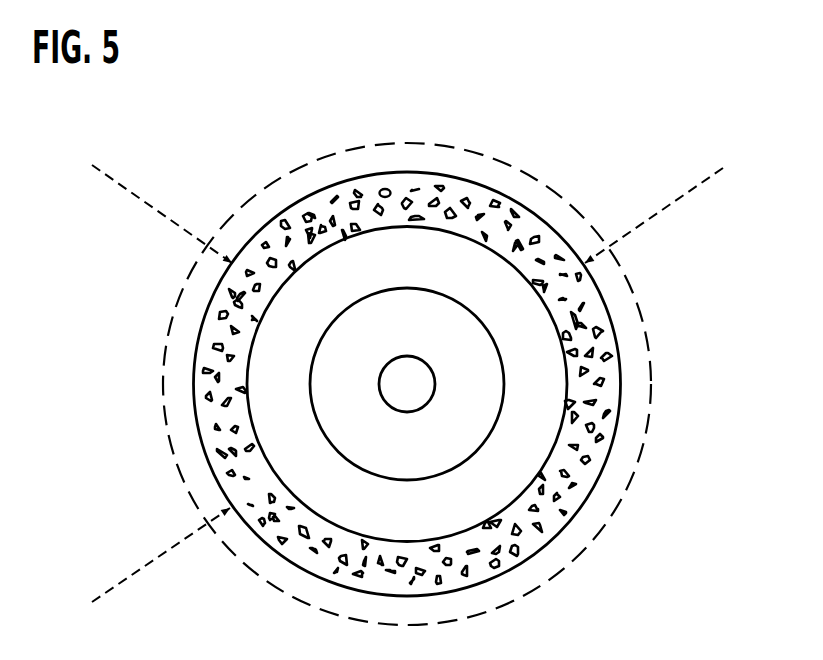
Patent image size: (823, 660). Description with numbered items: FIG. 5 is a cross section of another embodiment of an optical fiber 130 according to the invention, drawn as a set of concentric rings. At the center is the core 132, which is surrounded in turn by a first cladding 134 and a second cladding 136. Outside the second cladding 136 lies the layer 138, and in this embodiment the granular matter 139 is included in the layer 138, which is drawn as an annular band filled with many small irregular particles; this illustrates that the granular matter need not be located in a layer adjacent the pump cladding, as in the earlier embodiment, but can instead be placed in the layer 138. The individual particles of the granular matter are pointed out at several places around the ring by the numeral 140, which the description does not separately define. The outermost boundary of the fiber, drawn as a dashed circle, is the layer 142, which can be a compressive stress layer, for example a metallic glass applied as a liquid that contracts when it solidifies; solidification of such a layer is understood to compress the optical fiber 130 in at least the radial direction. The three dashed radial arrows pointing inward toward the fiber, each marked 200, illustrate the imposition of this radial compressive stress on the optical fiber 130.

The optical fiber 130 is at (707, 245).
The core 132 is at (436, 387).
The first cladding 134 is at (432, 458).
The second cladding 136 is at (438, 527).
The layer 138 is at (540, 542).
The granular matter 139 is at (512, 208).
The pores 140 is at (385, 190).
The layer 142 is at (630, 442).
The imposition of radial compressive stress 200 is at (137, 195).